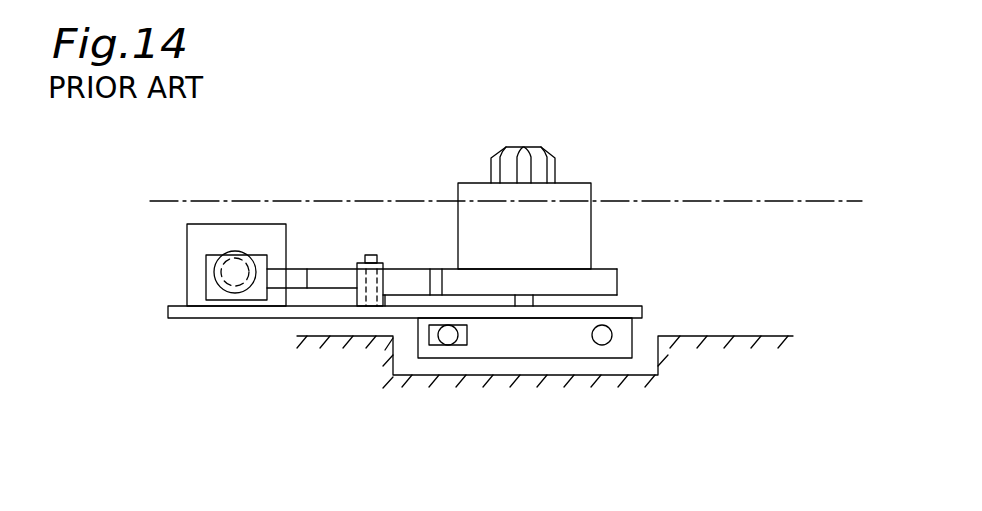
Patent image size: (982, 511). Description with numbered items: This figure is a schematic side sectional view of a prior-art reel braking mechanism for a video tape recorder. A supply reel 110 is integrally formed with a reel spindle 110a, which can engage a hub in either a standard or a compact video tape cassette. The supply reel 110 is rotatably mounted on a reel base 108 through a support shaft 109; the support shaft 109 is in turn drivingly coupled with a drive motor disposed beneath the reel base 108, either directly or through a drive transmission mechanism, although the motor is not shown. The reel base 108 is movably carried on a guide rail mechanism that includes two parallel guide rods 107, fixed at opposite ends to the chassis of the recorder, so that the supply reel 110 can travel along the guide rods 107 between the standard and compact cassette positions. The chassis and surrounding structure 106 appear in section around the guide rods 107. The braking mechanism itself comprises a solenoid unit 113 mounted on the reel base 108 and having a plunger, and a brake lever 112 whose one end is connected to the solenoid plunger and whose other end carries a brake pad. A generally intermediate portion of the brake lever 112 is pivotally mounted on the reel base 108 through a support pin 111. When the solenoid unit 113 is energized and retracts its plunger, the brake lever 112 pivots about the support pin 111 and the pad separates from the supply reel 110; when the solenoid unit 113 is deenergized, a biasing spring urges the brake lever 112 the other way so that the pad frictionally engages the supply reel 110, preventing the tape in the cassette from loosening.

The floor / ground 106 is at (745, 327).
The parallel guide rods 107 is at (602, 343).
The reel base 108 is at (673, 292).
The support shaft 109 is at (527, 304).
The supply reel 110 is at (592, 193).
The reel spindle 110a is at (543, 112).
The support pin 111 is at (372, 255).
The brake lever 112 is at (412, 276).
The solenoid unit 113 is at (195, 238).